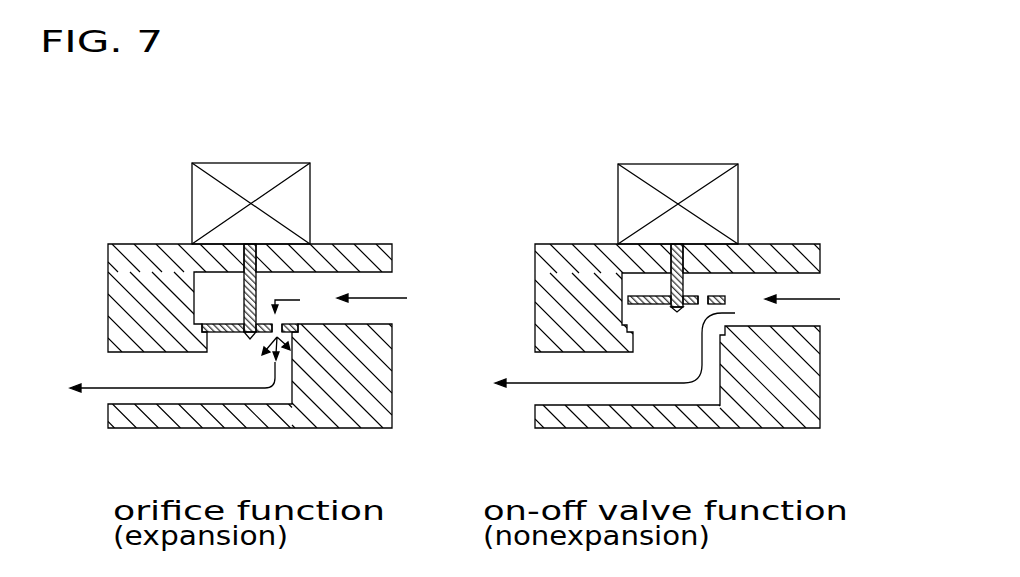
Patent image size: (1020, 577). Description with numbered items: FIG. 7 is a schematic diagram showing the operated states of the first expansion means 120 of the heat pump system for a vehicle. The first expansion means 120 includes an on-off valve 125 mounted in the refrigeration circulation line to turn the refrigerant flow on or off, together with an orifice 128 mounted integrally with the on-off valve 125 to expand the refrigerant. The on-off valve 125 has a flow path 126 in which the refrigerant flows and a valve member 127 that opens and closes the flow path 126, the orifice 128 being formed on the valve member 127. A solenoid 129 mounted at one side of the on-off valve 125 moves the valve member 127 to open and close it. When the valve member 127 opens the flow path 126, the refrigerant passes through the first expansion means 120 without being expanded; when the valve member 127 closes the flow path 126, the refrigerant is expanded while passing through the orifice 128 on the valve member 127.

The first expansion means 120 is at (105, 204).
The on-off valve 125 is at (137, 285).
The flow path 126 is at (187, 367).
The valve member 127 is at (225, 323).
The orifice 128 is at (278, 325).
The solenoid 129 is at (250, 163).